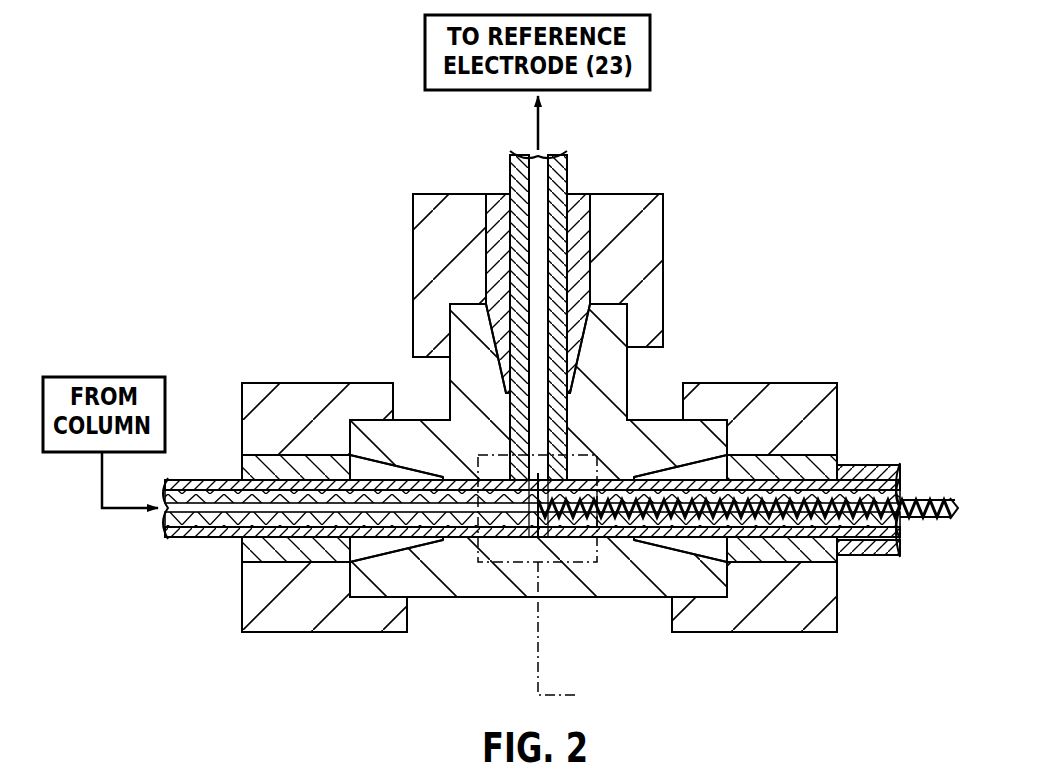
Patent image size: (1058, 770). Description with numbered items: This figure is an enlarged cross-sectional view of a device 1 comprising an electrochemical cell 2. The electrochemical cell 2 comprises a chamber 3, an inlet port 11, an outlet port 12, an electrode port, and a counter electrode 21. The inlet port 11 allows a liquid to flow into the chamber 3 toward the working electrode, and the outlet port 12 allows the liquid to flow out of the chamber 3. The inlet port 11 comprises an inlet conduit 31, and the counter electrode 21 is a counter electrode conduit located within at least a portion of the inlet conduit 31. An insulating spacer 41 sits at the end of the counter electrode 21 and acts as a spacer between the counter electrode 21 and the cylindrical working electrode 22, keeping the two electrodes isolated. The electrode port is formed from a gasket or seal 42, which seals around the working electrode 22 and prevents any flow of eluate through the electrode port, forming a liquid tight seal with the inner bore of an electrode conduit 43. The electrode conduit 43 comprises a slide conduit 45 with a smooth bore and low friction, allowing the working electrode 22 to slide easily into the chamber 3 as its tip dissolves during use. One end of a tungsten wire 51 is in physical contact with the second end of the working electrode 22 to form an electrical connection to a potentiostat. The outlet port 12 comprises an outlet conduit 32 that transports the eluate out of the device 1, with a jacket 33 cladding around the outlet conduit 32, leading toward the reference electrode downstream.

The device 1 is at (214, 169).
The electrochemical cell 2 is at (482, 436).
The chamber 3 is at (553, 288).
The inlet port 11 is at (156, 514).
The outlet port 12 is at (531, 147).
The counter electrode 21 is at (223, 528).
The working electrode 22 is at (855, 496).
The inlet conduit 31 is at (218, 477).
The outlet conduit 32 is at (518, 173).
The jacket 33 is at (569, 165).
The insulating spacer 41 is at (528, 527).
The seal 42 is at (548, 527).
The electrode conduit 43 is at (620, 537).
The slide conduit 45 is at (876, 530).
The tungsten wire 51 is at (938, 496).